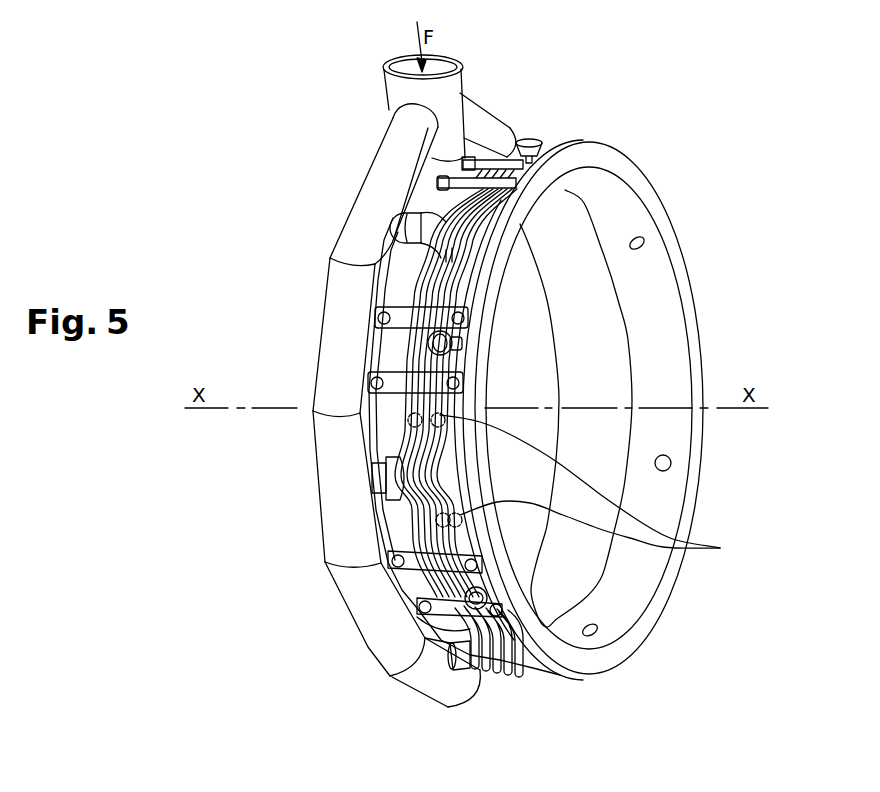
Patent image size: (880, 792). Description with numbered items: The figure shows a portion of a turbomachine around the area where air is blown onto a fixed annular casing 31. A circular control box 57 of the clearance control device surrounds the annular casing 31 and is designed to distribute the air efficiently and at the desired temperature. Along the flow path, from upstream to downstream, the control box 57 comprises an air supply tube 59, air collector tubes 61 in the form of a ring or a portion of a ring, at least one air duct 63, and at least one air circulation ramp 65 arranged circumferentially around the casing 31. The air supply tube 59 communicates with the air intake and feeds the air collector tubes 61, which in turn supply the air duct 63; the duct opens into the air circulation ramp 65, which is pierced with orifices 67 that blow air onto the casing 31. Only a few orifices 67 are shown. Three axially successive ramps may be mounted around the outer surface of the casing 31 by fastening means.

The annular casing 31 is at (604, 155).
The circular control box 57 is at (556, 124).
The air supply tube 59 is at (388, 102).
The air collector tubes 61 is at (370, 215).
The air duct 63 is at (421, 255).
The air circulation ramp 65 is at (467, 274).
The orifices 67 is at (595, 486).